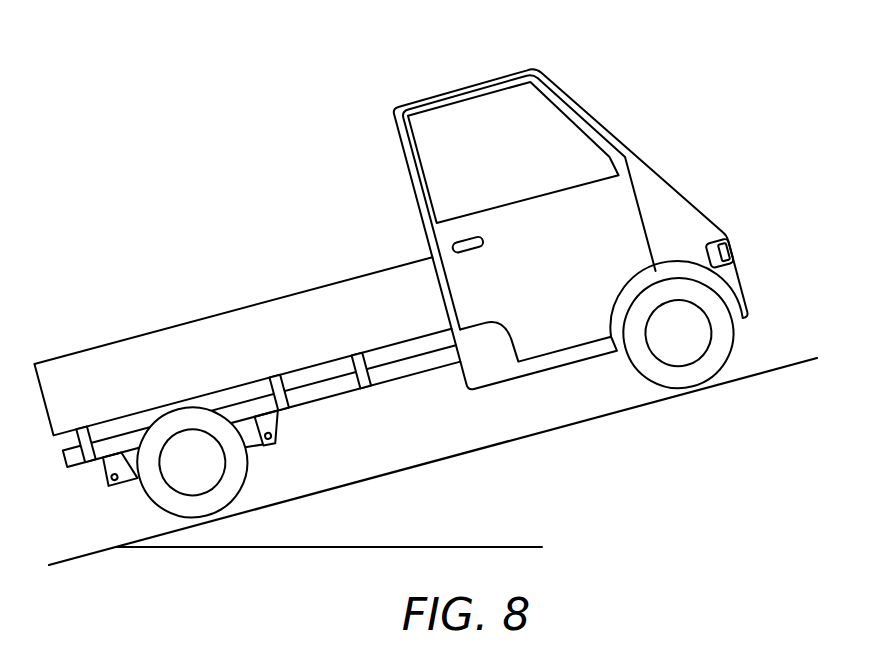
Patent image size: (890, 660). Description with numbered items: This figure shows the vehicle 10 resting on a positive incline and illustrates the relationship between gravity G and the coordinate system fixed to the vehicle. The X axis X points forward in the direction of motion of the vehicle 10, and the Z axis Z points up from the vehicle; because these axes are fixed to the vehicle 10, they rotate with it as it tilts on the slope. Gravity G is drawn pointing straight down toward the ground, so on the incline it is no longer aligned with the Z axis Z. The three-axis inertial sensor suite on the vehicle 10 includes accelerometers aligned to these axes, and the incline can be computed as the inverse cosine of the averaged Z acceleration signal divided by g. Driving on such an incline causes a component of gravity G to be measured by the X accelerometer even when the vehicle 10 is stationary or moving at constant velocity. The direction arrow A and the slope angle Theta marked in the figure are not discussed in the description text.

The vehicle 10 is at (148, 150).
The Z axis Z is at (131, 308).
The X axis X is at (131, 308).
The direction of travel / acceleration A is at (713, 195).
The gravity G is at (396, 402).
The slope angle Theta is at (498, 448).